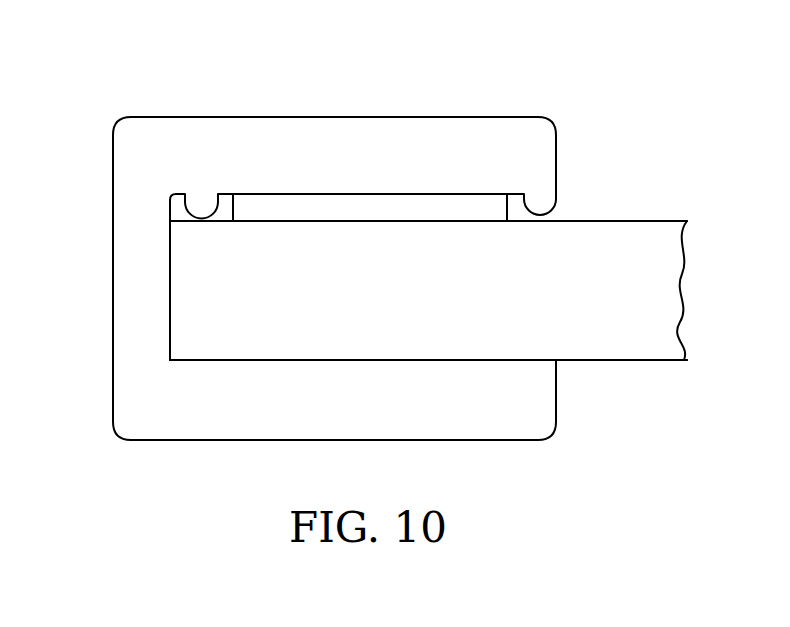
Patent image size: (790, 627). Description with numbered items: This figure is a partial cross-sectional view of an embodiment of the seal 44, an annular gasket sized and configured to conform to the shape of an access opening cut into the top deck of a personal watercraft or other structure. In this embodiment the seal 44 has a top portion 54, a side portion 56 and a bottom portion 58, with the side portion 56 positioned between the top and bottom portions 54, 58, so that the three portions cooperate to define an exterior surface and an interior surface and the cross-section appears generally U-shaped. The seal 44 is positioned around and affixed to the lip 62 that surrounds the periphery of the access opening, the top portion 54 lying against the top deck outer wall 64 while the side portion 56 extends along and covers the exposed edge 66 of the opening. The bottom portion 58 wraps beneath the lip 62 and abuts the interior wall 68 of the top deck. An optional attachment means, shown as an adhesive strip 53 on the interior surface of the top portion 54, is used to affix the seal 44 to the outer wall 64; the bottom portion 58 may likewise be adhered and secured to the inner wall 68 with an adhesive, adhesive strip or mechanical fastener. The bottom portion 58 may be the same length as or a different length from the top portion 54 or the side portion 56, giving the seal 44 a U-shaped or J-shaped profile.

The seal 44 is at (96, 103).
The adhesive strip 53 is at (481, 210).
The top portion 54 is at (485, 116).
The side portion 56 is at (130, 268).
The bottom portion 58 is at (474, 441).
The lip 62 is at (387, 332).
The top deck outer wall 64 is at (618, 221).
The exposed edge 66 is at (172, 333).
The interior wall 68 is at (600, 362).